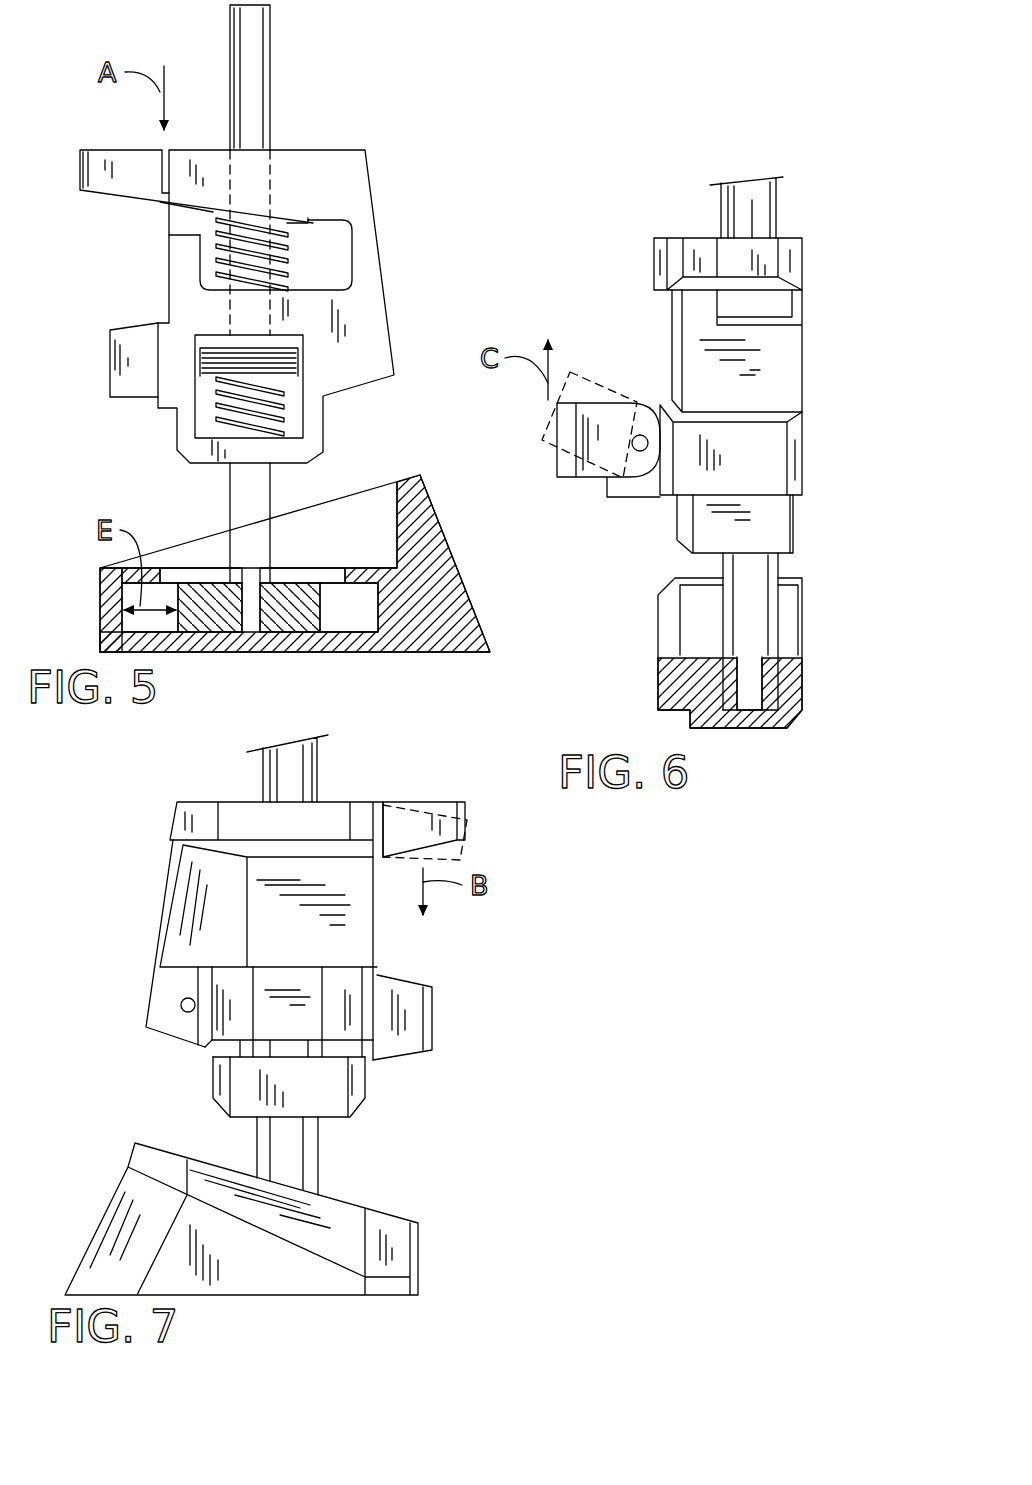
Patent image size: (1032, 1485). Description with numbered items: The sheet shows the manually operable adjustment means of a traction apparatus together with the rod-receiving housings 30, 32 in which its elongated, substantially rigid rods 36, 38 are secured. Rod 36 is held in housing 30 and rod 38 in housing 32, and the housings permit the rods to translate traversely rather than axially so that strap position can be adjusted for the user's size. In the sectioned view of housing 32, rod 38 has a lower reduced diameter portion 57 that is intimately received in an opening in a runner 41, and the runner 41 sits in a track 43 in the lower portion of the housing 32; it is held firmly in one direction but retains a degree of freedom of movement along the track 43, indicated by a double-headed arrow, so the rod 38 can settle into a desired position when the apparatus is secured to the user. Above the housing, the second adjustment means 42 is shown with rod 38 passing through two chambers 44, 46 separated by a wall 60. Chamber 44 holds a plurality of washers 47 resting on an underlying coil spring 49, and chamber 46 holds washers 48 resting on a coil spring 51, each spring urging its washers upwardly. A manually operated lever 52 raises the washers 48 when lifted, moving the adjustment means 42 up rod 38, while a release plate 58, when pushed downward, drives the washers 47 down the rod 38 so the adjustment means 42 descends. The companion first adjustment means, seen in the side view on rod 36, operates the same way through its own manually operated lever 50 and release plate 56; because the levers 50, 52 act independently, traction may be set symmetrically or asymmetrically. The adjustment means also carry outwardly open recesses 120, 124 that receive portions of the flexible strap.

In FIG. 7, the rod-receiving housing 30 is at (368, 1298).
In FIG. 5, the rod-receiving housing 32 is at (100, 585).
In FIG. 6, the rod-receiving housing 32 is at (793, 722).
In FIG. 7, the rod 36 is at (307, 773).
In FIG. 5, the rod 38 is at (262, 78).
In FIG. 6, the rod 38 is at (772, 213).
In FIG. 5, the runner 41 is at (305, 620).
In FIG. 6, the runner 41 is at (793, 683).
In FIG. 5, the second adjustment means 42 is at (354, 142).
In FIG. 5, the track 43 is at (150, 622).
In FIG. 5, the chamber 44 is at (338, 248).
In FIG. 5, the chamber 46 is at (293, 412).
In FIG. 5, the washers 47 is at (212, 214).
In FIG. 5, the washers 48 is at (200, 370).
In FIG. 5, the coil spring 49 is at (293, 258).
In FIG. 7, the manually operated lever 50 is at (347, 975).
In FIG. 5, the coil spring 51 is at (216, 412).
In FIG. 6, the manually operated lever 52 is at (593, 478).
In FIG. 7, the release plate 56 is at (440, 802).
In FIG. 5, the lower reduced diameter portion 57 is at (249, 618).
In FIG. 6, the lower reduced diameter portion 57 is at (750, 697).
In FIG. 5, the release plate 58 is at (116, 158).
In FIG. 5, the wall 60 is at (214, 309).
In FIG. 6, the outwardly open recess 120 is at (663, 337).
In FIG. 7, the outwardly open recess 124 is at (180, 890).